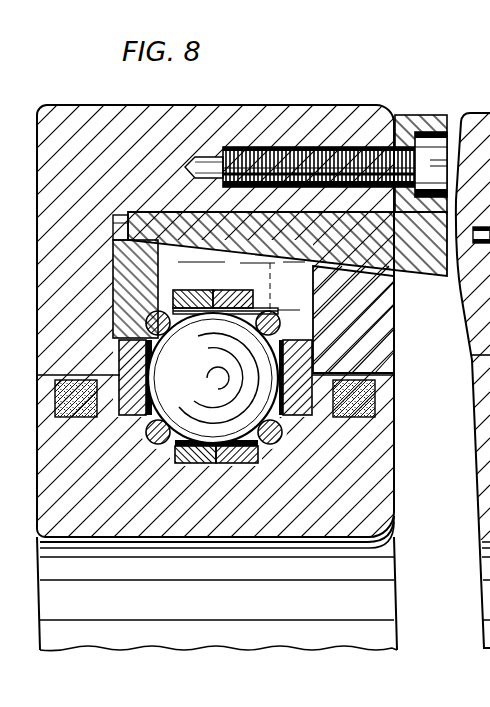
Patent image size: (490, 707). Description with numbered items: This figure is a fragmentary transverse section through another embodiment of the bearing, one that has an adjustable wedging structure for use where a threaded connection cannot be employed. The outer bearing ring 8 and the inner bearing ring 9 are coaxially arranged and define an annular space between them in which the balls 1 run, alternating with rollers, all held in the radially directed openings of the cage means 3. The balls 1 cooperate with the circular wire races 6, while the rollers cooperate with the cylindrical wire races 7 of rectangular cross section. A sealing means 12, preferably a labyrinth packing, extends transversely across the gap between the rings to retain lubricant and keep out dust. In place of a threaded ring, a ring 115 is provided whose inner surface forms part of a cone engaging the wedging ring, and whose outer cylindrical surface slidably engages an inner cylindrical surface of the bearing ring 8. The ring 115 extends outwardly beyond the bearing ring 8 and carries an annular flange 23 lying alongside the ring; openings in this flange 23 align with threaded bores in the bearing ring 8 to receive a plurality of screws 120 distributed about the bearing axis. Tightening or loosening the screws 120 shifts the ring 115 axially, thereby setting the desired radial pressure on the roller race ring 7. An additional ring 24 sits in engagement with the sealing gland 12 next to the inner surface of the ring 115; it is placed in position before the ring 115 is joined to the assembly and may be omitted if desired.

The balls 1 is at (197, 410).
The cage means 3 is at (306, 412).
The wire races for the balls 6 is at (282, 440).
The wire races for the rollers 7 is at (244, 467).
The outer bearing ring 8 is at (352, 118).
The inner bearing ring 9 is at (382, 498).
The sealing means 12 is at (372, 394).
The annular flange 23 is at (406, 122).
The additional ring 24 is at (378, 343).
The ring 115 is at (428, 266).
The screws 120 is at (453, 137).